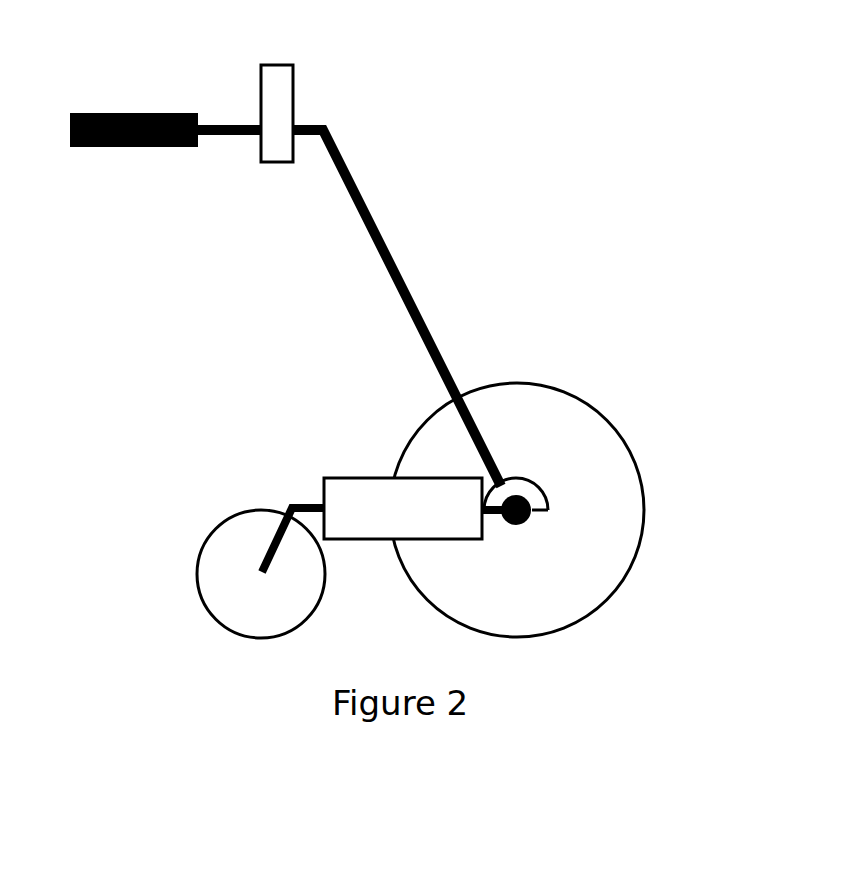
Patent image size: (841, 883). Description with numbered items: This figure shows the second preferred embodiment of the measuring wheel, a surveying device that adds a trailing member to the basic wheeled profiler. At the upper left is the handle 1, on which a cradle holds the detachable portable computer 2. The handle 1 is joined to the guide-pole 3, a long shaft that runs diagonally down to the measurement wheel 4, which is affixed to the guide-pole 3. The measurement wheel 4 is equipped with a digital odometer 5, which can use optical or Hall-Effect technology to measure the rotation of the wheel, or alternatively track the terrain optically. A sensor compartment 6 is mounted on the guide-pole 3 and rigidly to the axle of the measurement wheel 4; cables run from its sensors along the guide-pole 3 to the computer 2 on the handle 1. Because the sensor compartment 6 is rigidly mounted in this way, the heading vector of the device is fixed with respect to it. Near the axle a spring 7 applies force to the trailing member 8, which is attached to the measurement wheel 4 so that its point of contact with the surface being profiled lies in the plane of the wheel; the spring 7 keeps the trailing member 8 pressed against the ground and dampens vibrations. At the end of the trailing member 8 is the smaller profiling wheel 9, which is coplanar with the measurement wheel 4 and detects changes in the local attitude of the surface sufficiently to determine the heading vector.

The handle 1 is at (133, 164).
The detachable portable computer 2 is at (297, 100).
The guide-pole 3 is at (400, 255).
The measurement wheel 4 is at (645, 500).
The digital odometer 5 is at (528, 523).
The sensor compartment 6 is at (324, 478).
The spring 7 is at (520, 477).
The trailing member 8 is at (290, 505).
The profiling wheel 9 is at (197, 562).